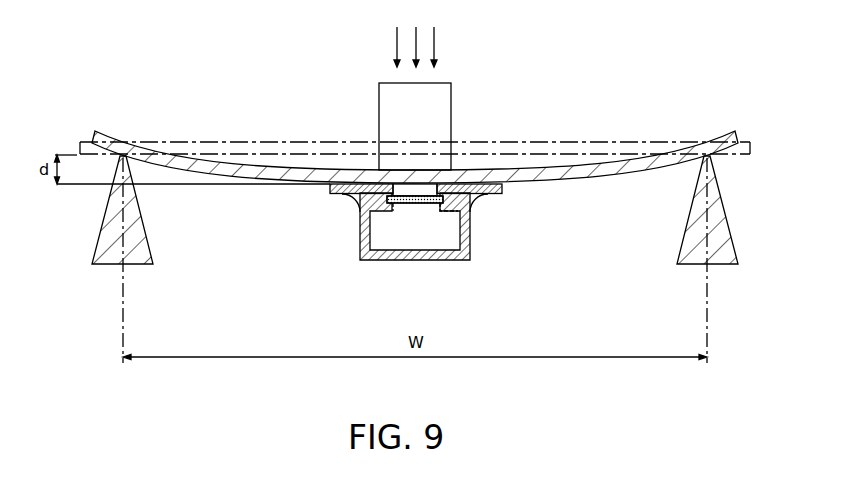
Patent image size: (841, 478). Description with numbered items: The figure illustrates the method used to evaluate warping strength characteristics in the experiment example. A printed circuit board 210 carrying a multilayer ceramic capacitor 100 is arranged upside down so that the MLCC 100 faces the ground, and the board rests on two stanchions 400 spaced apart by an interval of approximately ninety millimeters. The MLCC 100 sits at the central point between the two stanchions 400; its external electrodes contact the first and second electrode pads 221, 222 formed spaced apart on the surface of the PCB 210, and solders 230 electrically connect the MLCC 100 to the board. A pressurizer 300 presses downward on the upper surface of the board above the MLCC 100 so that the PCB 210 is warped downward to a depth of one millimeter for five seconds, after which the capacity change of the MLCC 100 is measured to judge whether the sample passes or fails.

The multilayer ceramic capacitor 100 is at (415, 260).
The printed circuit board 210 is at (340, 148).
The first electrode pad 221 is at (503, 192).
The second electrode pad 222 is at (330, 189).
The solder 230 is at (477, 203).
The pressurizer 300 is at (443, 109).
The stanchion 400 is at (110, 238).